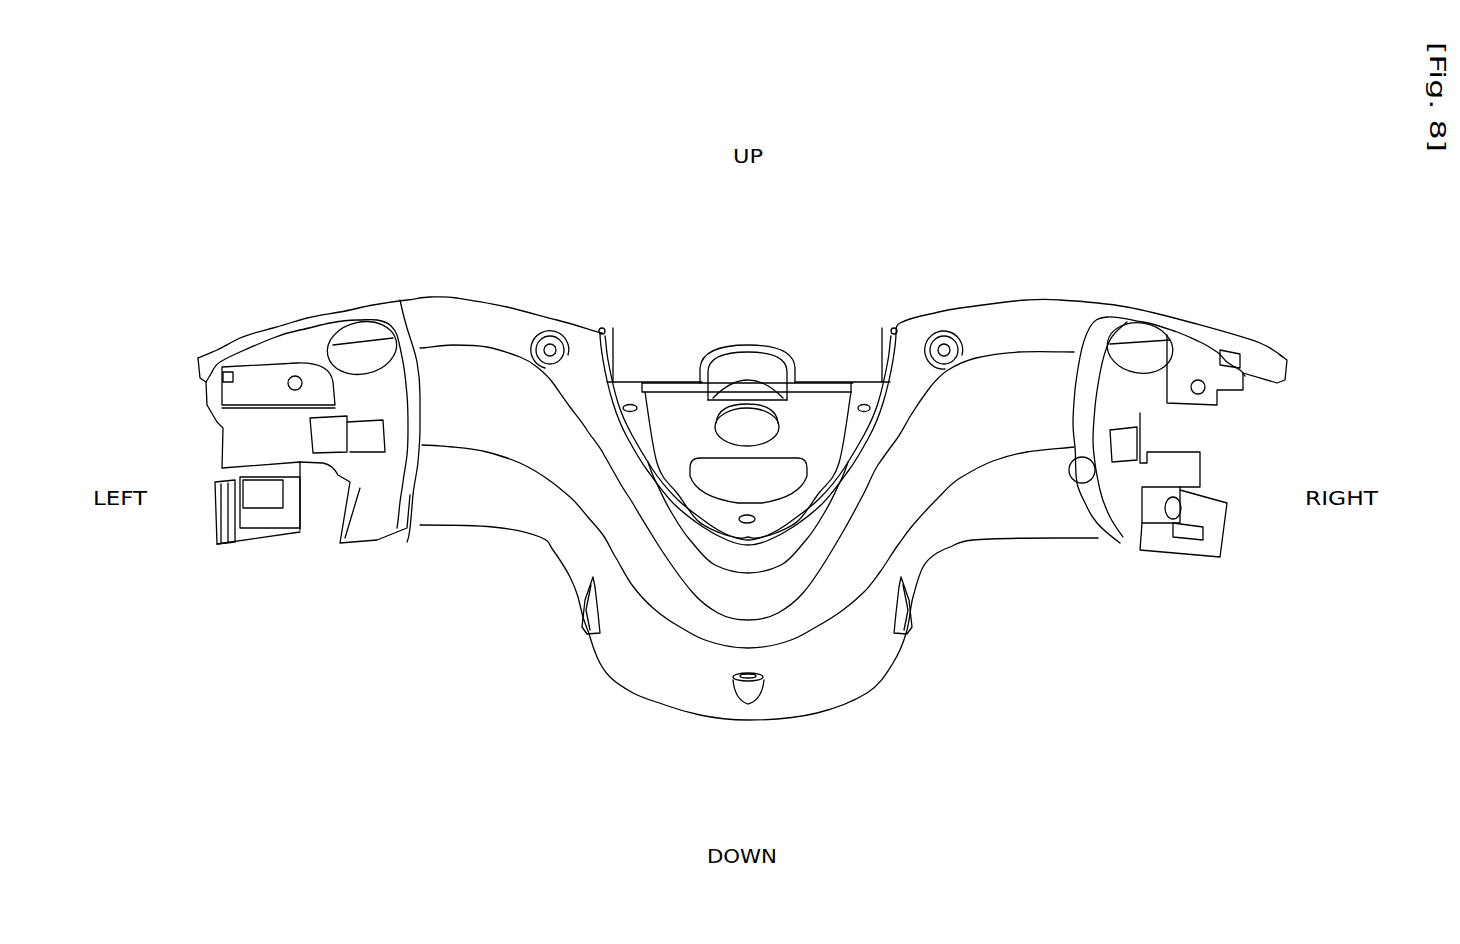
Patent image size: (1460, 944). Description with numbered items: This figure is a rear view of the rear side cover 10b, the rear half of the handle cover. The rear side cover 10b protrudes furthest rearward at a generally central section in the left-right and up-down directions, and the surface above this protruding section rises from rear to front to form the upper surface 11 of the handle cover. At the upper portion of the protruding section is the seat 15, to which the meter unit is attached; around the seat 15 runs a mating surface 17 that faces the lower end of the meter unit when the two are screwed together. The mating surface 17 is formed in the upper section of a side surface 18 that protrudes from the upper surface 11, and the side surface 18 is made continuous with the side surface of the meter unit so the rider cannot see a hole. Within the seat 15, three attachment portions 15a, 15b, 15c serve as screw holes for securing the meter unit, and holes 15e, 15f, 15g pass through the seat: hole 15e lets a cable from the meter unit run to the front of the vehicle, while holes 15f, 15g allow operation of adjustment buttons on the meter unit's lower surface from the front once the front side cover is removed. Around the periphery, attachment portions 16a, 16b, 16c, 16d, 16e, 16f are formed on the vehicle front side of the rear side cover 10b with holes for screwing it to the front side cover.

The rear side cover 10b is at (403, 250).
The upper surface 11 is at (465, 315).
The seat 15 is at (815, 380).
The attachment portion 15a is at (630, 404).
The attachment portion 15b is at (740, 519).
The attachment portion 15c is at (866, 404).
The hole 15e is at (722, 418).
The hole 15f is at (747, 395).
The hole 15g is at (690, 477).
The attachment portion 16a is at (538, 328).
The attachment portion 16b is at (950, 345).
The attachment portion 16c is at (587, 623).
The attachment portion 16d is at (903, 623).
The attachment portion 16e is at (252, 508).
The attachment portion 16f is at (1160, 503).
The mating surface 17 is at (893, 333).
The side surface 18 is at (837, 488).